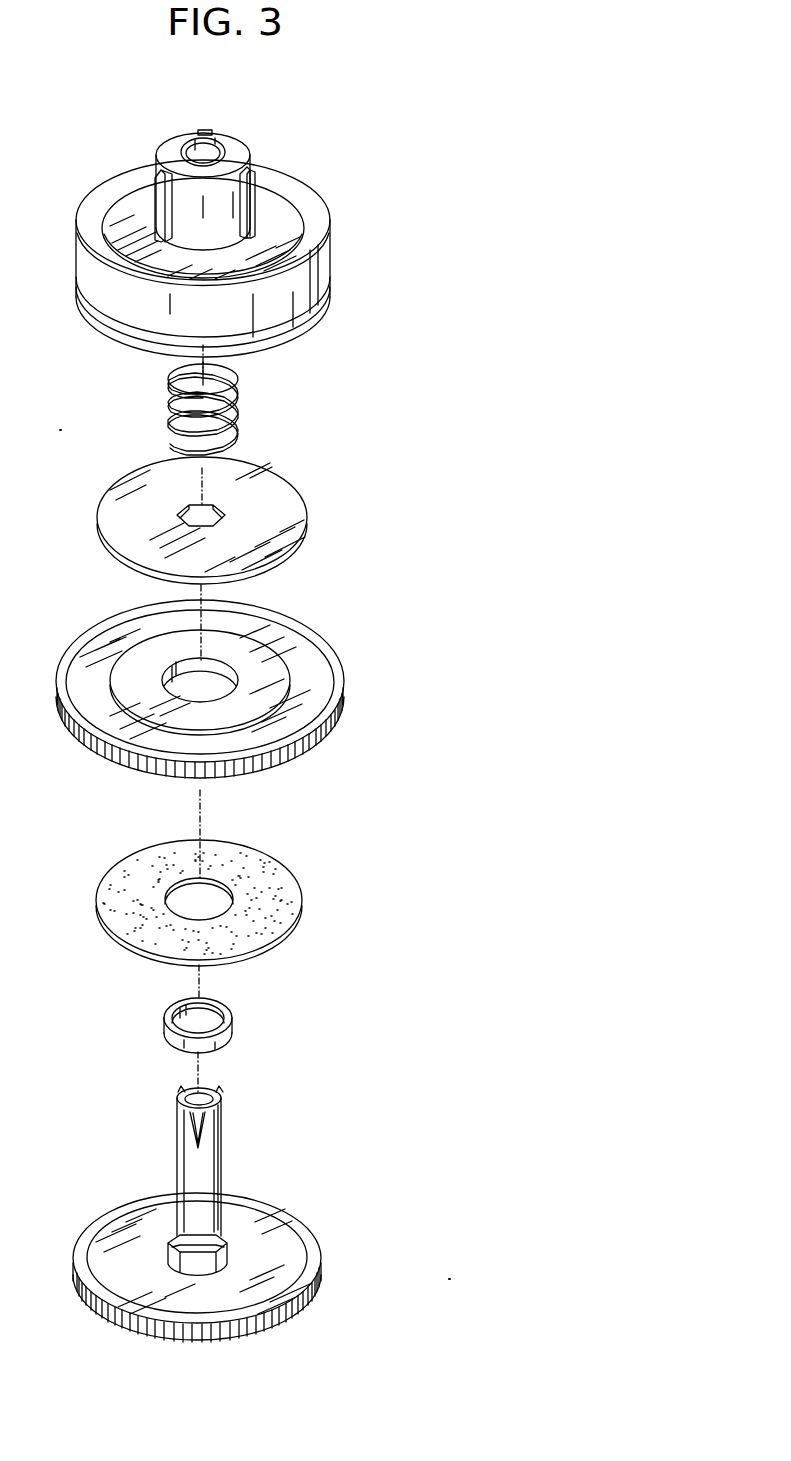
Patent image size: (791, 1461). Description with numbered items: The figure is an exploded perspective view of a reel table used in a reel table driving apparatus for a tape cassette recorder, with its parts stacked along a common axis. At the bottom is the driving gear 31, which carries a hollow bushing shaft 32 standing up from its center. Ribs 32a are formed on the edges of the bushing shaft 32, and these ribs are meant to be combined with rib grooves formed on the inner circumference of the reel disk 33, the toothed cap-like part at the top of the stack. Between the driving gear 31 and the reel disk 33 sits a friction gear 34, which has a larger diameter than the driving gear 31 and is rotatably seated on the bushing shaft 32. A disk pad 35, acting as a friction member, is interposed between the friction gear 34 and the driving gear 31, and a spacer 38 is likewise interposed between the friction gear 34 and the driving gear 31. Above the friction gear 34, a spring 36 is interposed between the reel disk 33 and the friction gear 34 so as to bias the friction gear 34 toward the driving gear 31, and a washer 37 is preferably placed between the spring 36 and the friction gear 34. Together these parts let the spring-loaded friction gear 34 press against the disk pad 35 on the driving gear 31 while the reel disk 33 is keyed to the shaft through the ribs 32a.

The driving gear 31 is at (322, 1253).
The hollow bushing shaft 32 is at (222, 1167).
The ribs 32a is at (220, 1092).
The reel disk 33 is at (330, 207).
The friction gear 34 is at (340, 708).
The disk pad 35 is at (302, 905).
The spring 36 is at (237, 402).
The washer 37 is at (303, 517).
The spacer 38 is at (231, 1030).